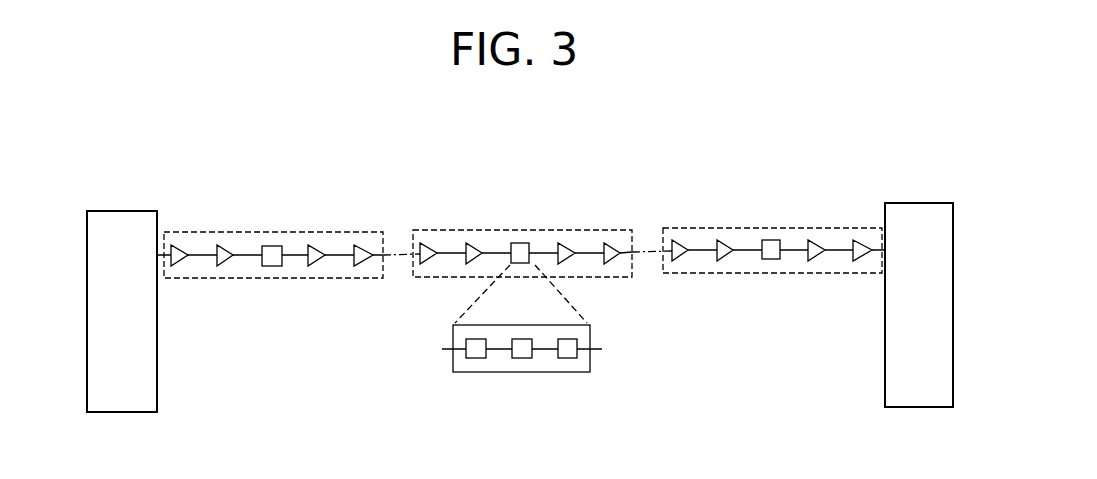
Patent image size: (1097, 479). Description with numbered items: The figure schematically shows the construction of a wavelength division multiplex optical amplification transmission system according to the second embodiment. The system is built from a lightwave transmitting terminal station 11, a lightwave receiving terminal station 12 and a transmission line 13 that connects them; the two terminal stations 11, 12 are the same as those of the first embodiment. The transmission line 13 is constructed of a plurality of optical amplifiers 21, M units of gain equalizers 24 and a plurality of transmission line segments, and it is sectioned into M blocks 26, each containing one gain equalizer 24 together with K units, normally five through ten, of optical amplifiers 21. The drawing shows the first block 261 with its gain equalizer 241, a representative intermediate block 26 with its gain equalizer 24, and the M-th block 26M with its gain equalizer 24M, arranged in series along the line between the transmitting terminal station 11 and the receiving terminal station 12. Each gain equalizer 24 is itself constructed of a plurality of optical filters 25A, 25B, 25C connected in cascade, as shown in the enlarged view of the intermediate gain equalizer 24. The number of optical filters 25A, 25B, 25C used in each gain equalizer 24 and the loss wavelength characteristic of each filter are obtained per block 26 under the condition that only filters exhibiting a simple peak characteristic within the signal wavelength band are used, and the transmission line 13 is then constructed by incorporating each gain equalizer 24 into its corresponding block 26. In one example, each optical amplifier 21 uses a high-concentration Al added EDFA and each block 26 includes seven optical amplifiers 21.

The lightwave transmitting terminal station 11 is at (123, 207).
The lightwave receiving terminal station 12 is at (920, 201).
The transmission line 13 is at (860, 188).
The optical amplifier 21 is at (176, 266).
The gain equalizer 24 is at (592, 333).
The gain equalizer 241 is at (272, 266).
The gain equalizer 24M is at (771, 259).
The optical filter 25A is at (476, 358).
The optical filter 25B is at (522, 358).
The optical filter 25C is at (567, 358).
The block 26 is at (562, 229).
The block 261 is at (305, 232).
The block 26M is at (807, 226).